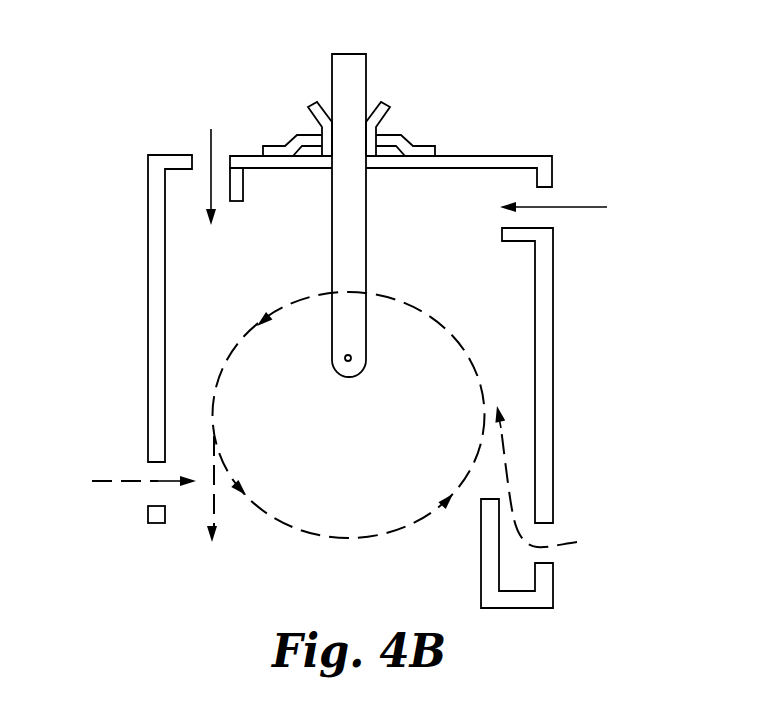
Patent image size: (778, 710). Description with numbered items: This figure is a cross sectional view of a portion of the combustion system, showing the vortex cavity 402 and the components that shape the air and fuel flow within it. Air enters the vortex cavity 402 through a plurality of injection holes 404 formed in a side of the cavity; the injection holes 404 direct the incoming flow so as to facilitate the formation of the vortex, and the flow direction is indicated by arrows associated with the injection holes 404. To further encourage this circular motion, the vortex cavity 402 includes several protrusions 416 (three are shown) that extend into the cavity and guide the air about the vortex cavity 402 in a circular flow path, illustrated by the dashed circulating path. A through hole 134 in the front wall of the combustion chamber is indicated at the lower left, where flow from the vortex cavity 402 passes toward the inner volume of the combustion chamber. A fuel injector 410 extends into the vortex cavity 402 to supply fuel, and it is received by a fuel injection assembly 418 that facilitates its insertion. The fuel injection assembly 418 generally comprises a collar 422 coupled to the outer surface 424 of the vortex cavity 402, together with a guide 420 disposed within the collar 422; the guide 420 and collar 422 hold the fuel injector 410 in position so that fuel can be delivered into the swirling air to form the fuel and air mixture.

The through hole 134 is at (118, 501).
The vortex cavity 402 is at (147, 210).
The injection holes 404 is at (377, 334).
The fuel injector 410 is at (366, 343).
The protrusions 416 is at (243, 185).
The fuel injection assembly 418 is at (407, 99).
The guide 420 is at (395, 105).
The collar 422 is at (423, 143).
The outer surface 424 is at (535, 154).